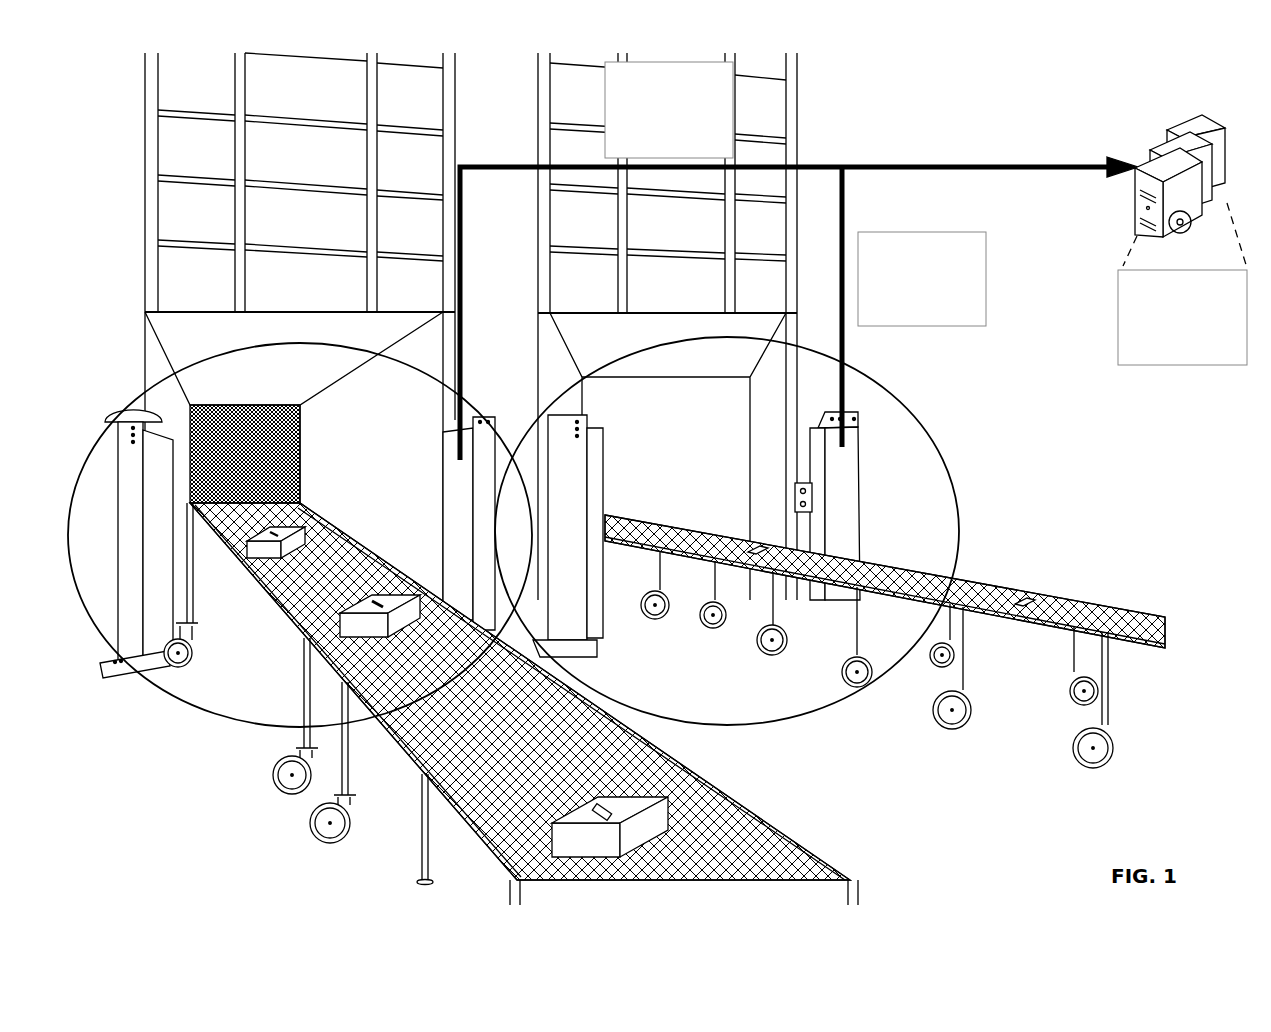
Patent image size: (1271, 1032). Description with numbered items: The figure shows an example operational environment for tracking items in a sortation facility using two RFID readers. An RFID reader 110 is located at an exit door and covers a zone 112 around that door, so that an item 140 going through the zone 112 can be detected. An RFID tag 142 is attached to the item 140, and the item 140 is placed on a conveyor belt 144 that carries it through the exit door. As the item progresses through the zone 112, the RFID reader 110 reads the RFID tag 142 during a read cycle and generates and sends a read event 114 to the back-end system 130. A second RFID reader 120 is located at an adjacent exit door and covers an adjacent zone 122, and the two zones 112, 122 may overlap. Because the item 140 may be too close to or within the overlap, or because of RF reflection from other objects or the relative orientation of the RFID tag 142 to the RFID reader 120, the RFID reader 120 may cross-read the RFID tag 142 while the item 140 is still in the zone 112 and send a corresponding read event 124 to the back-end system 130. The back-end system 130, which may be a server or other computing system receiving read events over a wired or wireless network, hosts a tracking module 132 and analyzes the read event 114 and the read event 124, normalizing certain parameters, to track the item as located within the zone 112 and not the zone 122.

The RFID reader 110 is at (468, 508).
The zone 112 is at (233, 725).
The read event 114 is at (669, 110).
The RFID reader 120 is at (848, 520).
The zone 122 is at (960, 530).
The read event 124 is at (922, 279).
The back-end system 130 is at (1165, 137).
The tracking module 132 is at (1182, 317).
The item 140 is at (511, 675).
The RFID tag 142 is at (300, 503).
The conveyor belt 144 is at (410, 760).